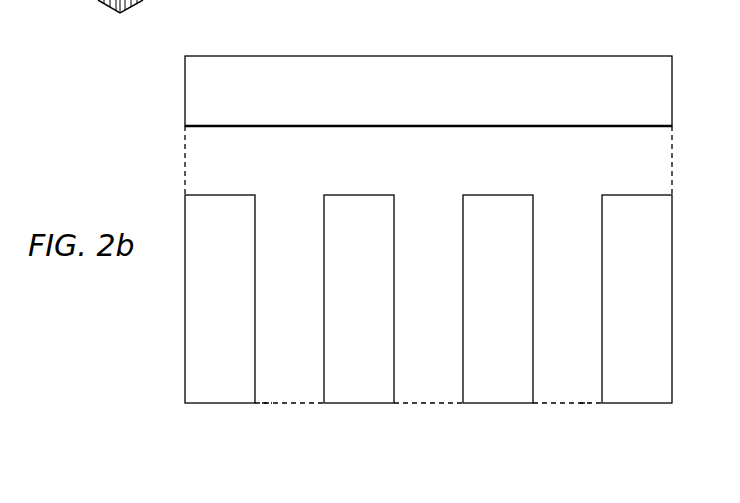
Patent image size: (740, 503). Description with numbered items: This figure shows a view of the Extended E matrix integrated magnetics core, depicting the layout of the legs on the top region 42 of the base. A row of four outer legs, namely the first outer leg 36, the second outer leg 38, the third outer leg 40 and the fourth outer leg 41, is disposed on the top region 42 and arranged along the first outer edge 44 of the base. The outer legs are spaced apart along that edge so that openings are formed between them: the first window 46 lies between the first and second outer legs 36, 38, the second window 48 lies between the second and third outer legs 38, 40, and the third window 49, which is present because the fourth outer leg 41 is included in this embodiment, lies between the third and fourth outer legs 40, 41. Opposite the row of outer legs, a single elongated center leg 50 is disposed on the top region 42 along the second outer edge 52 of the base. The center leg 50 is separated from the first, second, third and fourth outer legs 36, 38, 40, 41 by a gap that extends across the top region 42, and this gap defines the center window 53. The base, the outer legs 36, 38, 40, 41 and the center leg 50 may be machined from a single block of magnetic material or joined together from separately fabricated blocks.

The first outer leg 36 is at (207, 288).
The second outer leg 38 is at (346, 288).
The third outer leg 40 is at (485, 288).
The fourth outer leg 41 is at (624, 288).
The top region 42 is at (554, 229).
The first outer edge 44 is at (303, 405).
The first window 46 is at (278, 419).
The second window 48 is at (420, 419).
The third window 49 is at (585, 417).
The center leg 50 is at (522, 63).
The second outer edge 52 is at (316, 55).
The center window 53 is at (170, 152).